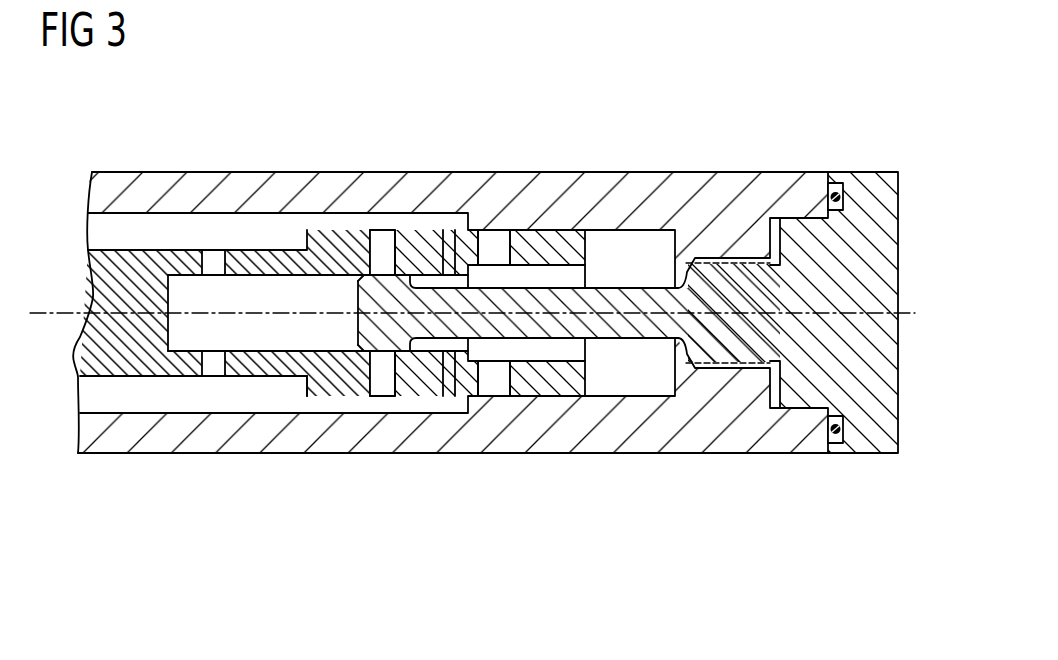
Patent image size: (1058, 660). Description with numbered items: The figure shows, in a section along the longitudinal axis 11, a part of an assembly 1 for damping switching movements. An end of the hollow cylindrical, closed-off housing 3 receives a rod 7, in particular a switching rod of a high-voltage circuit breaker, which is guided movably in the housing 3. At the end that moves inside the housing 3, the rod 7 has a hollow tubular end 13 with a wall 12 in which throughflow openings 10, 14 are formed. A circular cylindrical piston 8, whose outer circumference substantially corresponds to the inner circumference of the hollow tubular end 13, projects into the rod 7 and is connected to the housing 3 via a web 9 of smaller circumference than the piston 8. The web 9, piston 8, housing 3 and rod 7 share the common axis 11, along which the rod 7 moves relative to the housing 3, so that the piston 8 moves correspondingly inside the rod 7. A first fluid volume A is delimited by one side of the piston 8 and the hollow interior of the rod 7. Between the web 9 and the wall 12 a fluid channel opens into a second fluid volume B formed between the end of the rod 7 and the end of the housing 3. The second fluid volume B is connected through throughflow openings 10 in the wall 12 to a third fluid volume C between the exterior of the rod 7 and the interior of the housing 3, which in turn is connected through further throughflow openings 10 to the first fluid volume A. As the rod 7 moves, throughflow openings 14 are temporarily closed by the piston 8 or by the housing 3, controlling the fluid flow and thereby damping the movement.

The assembly 1 is at (809, 101).
The housing 3 is at (692, 182).
The rod 7 is at (133, 358).
The piston 8 is at (372, 298).
The web 9 is at (624, 298).
The throughflow openings 10 is at (215, 260).
The longitudinal axis 11 is at (44, 312).
The wall 12 is at (540, 250).
The hollow tubular end 13 is at (287, 388).
The throughflow openings 14 is at (490, 245).
The first fluid volume A is at (320, 340).
The second fluid volume B is at (640, 245).
The third fluid volume C is at (265, 230).